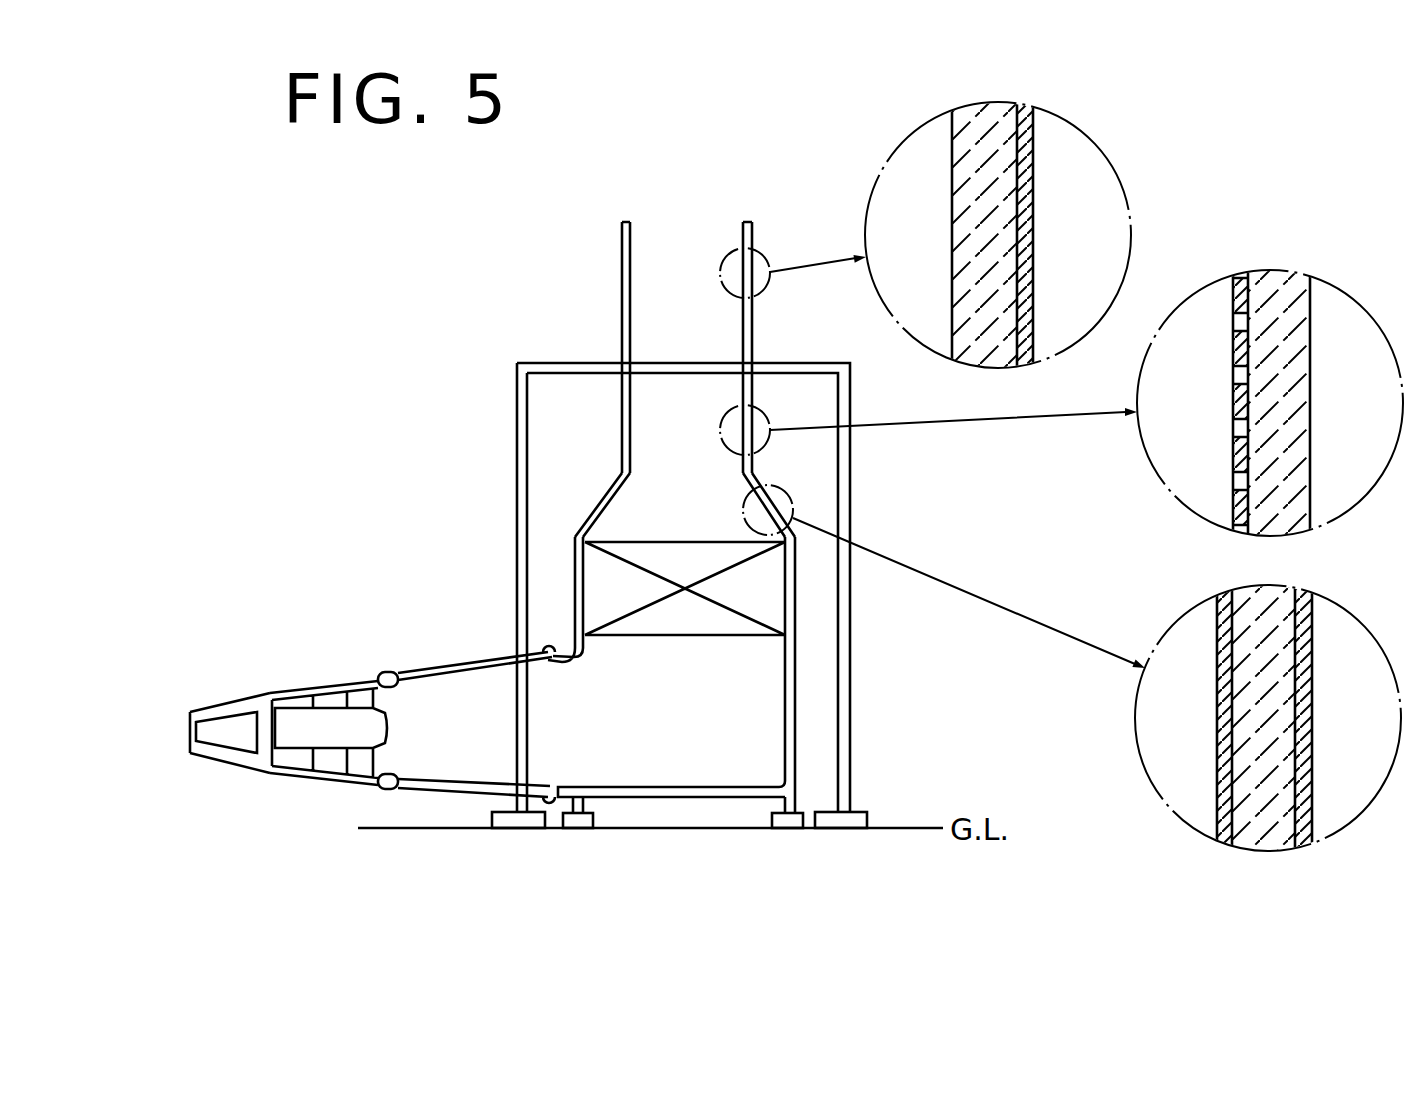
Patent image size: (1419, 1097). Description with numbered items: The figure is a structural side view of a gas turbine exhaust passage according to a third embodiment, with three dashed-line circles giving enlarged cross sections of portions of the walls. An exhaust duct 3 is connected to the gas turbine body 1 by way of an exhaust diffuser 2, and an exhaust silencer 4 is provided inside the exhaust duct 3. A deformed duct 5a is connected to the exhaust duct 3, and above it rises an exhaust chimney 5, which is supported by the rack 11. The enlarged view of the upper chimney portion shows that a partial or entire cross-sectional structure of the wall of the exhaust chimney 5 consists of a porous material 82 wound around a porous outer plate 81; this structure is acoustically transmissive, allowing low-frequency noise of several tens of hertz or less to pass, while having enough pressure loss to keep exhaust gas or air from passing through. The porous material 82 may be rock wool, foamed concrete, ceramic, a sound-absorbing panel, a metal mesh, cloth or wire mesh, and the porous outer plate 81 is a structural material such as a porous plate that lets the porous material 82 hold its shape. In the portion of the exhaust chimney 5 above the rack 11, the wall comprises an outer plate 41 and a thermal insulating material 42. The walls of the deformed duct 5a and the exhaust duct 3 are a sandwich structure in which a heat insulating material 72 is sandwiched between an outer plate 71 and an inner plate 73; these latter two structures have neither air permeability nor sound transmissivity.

The gas turbine body 1 is at (258, 628).
The exhaust diffuser 2 is at (398, 663).
The exhaust duct 3 is at (485, 543).
The exhaust silencer 4 is at (763, 600).
The exhaust chimney 5 is at (508, 473).
The deformed duct 5a is at (485, 473).
The rack 11 is at (847, 695).
The outer plate 41 is at (1037, 142).
The thermal insulating material 42 is at (957, 146).
The outer plate 71 is at (1305, 637).
The heat insulating material 72 is at (1267, 597).
The inner plate 73 is at (1217, 632).
The porous outer plate 81 is at (1238, 304).
The porous material 82 is at (1302, 308).